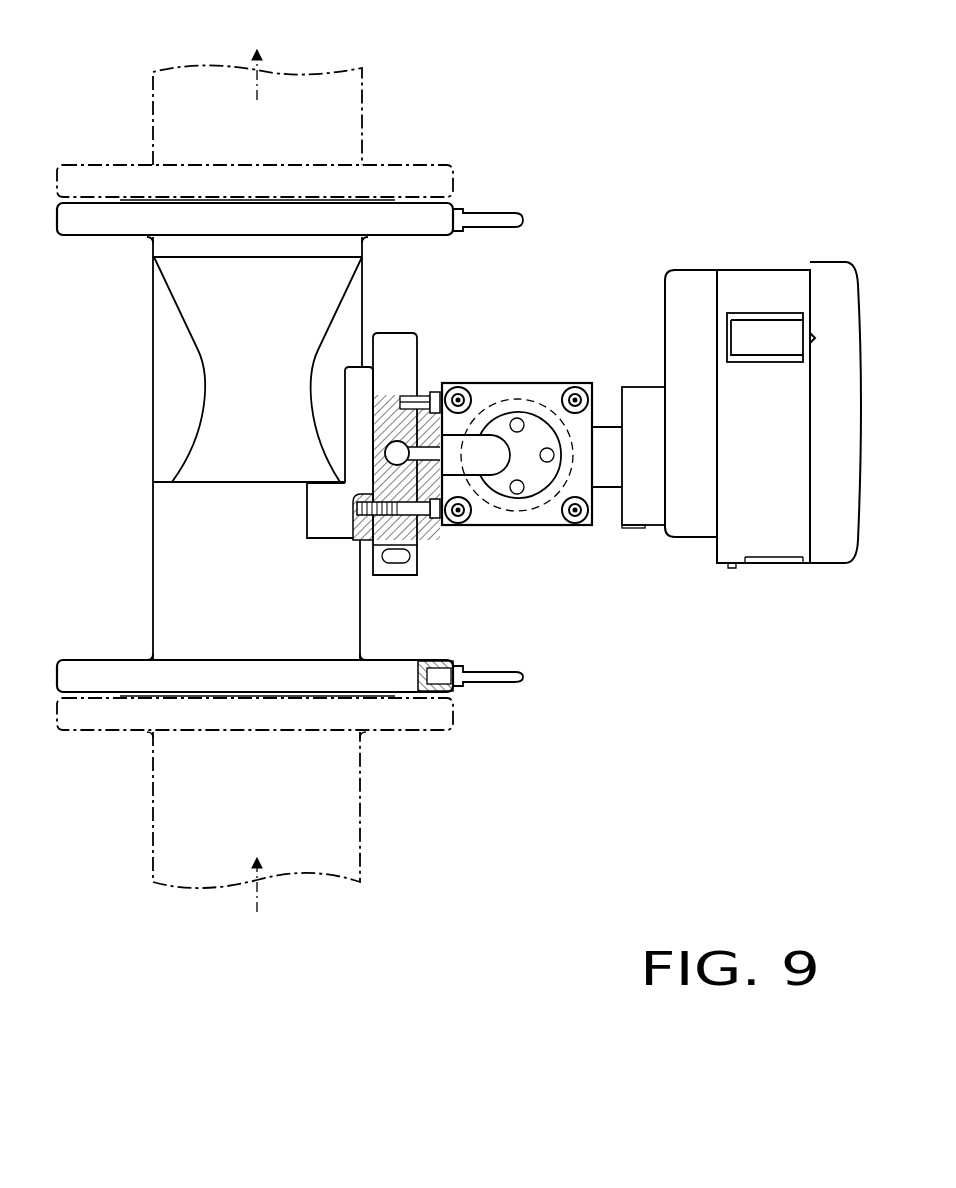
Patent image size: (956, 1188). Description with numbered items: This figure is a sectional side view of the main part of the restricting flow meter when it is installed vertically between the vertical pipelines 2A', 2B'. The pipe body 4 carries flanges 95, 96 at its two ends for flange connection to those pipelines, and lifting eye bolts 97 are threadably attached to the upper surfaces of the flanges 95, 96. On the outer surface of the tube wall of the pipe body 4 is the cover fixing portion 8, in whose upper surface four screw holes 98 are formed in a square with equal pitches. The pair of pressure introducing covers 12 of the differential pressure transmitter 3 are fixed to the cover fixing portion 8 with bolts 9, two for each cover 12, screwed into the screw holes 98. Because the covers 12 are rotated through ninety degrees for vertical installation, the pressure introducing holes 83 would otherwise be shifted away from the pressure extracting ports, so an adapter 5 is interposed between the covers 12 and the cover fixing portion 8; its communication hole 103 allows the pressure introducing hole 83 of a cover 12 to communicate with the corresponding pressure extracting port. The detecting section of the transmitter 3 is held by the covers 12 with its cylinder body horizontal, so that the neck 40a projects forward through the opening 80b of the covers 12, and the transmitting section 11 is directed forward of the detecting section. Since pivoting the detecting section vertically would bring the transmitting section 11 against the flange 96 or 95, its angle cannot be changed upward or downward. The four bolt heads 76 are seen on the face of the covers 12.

The vertical pipeline 2B' is at (300, 107).
The vertical pipeline 2A' is at (296, 822).
The flange 96 is at (93, 237).
The flange 95 is at (90, 657).
The lifting eye bolt 97 is at (520, 213).
The pipe body 4 is at (148, 565).
The cover fixing portion 8 is at (366, 392).
The screw hole 98 is at (352, 528).
The adapter 5 is at (411, 333).
The bolt 9 is at (428, 391).
The communication hole 103 is at (385, 452).
The pressure introducing hole 83 is at (365, 496).
The pressure introducing cover 12 is at (531, 381).
The opening 80b is at (586, 455).
The screws 76 is at (463, 392).
The neck 40a is at (610, 430).
The differential pressure transmitter 3 is at (636, 298).
The transmitting section 11 is at (779, 444).